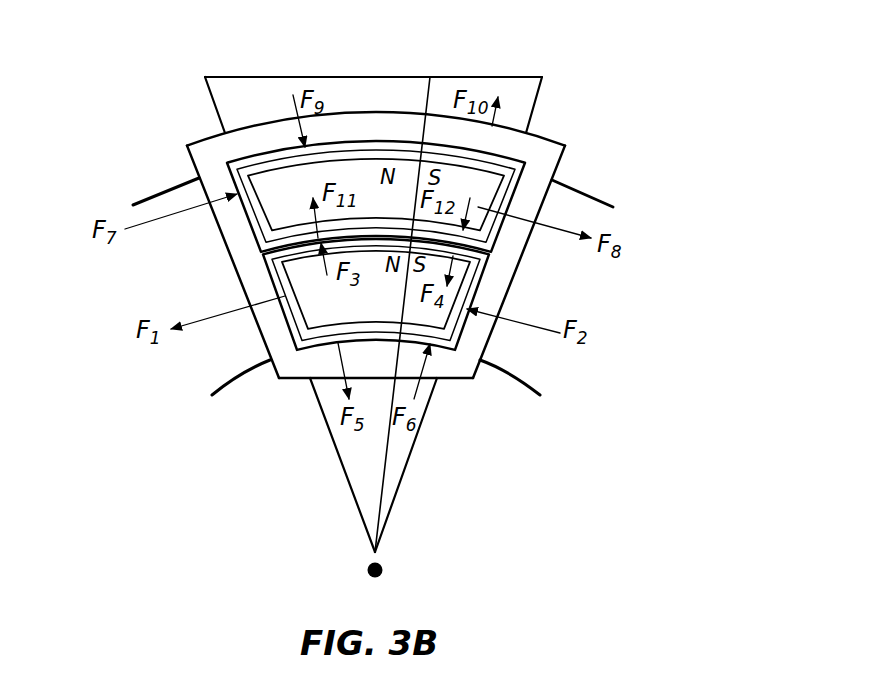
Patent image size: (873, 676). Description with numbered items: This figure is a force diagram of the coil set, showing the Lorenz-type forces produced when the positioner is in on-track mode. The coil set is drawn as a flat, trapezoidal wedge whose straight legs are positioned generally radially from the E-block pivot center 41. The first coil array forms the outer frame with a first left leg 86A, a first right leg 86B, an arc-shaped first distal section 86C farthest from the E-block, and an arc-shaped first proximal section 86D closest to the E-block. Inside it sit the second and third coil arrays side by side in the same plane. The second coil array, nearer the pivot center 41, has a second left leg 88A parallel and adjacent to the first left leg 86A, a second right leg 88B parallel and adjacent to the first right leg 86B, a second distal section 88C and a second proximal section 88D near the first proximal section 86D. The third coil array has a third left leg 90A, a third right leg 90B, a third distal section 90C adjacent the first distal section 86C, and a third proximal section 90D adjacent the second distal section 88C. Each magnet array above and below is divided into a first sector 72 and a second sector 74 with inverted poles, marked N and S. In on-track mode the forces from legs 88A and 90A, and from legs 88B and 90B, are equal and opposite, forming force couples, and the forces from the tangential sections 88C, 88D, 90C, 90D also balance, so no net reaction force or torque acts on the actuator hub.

The E-block pivot center 41 is at (384, 570).
The first sector 72 is at (300, 198).
The second sector 74 is at (438, 333).
The first left leg 86A is at (248, 262).
The first right leg 86B is at (502, 282).
The first distal section 86C is at (370, 124).
The first proximal section 86D is at (319, 370).
The second left leg 88A is at (255, 322).
The second right leg 88B is at (543, 377).
The second distal section 88C is at (524, 251).
The second proximal section 88D is at (297, 380).
The third left leg 90A is at (240, 205).
The third right leg 90B is at (503, 193).
The third distal section 90C is at (268, 158).
The third proximal section 90D is at (236, 170).